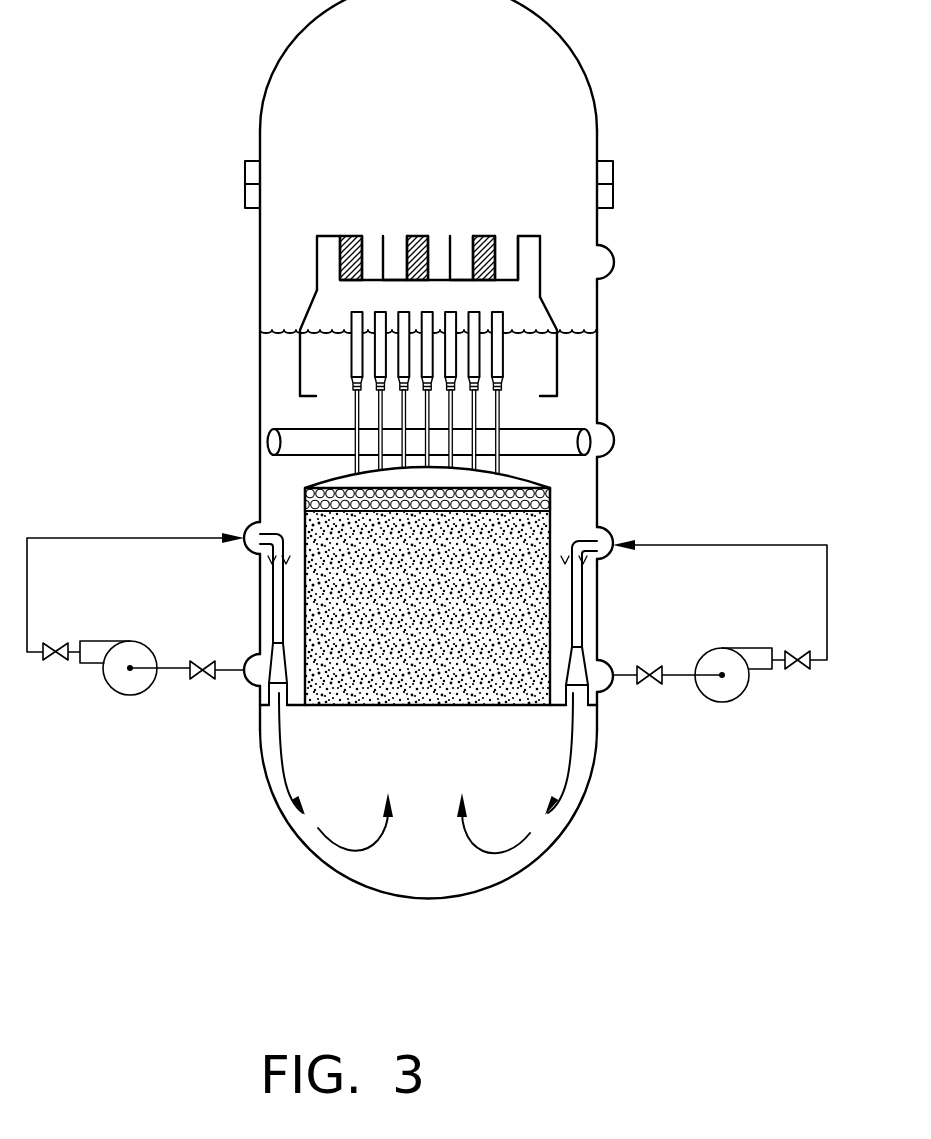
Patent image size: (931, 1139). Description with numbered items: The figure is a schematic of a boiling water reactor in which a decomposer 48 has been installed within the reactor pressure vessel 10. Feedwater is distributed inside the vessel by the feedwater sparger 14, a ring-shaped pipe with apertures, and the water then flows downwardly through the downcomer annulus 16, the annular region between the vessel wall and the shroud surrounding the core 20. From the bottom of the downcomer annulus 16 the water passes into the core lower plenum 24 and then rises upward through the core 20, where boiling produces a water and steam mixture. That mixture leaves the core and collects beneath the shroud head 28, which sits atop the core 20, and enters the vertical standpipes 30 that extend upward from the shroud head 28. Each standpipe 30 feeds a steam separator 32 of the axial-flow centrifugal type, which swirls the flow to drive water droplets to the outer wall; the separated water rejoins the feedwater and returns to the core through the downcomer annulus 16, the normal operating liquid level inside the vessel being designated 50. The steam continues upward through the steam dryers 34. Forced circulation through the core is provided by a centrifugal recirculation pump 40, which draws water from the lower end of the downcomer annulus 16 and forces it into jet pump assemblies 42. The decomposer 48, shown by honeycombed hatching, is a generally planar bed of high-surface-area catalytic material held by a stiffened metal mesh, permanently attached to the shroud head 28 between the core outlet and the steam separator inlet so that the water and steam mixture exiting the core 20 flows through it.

The reactor pressure vessel 10 is at (597, 362).
The feedwater sparger 14 is at (565, 428).
The downcomer annulus 16 is at (262, 618).
The core 20 is at (556, 600).
The core lower plenum 24 is at (527, 812).
The shroud head 28 is at (548, 480).
The vertical standpipes 30 is at (362, 443).
The steam separator 32 is at (357, 355).
The steam dryers 34 is at (542, 238).
The centrifugal recirculation pump 40 is at (728, 702).
The jet pump assemblies 42 is at (575, 660).
The decomposer 48 is at (543, 503).
The liquid water level 50 is at (285, 327).